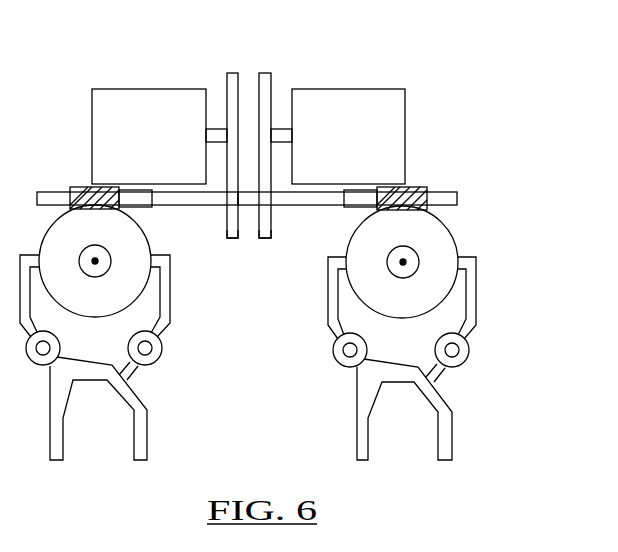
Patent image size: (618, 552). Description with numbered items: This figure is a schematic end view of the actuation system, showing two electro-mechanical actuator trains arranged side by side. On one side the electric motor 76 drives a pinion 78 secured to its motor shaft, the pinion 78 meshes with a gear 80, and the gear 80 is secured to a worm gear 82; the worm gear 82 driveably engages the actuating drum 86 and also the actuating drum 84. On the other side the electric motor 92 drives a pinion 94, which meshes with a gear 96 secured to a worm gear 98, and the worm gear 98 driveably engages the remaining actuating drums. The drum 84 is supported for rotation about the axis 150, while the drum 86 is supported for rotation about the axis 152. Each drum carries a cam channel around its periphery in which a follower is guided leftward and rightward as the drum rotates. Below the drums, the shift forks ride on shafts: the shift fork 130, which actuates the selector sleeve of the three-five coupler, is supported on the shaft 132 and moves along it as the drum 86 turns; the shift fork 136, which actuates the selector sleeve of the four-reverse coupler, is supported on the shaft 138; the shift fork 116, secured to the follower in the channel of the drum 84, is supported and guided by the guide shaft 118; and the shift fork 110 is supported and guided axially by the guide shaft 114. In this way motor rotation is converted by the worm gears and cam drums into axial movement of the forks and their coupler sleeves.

The electric motor 76 is at (160, 147).
The electric motor 92 is at (362, 147).
The pinion 78 is at (232, 72).
The pinion 94 is at (268, 72).
The gear 80 is at (233, 238).
The gear 96 is at (265, 238).
The worm gear 82 is at (212, 205).
The worm gear 98 is at (335, 205).
The actuating drum 86 is at (47, 238).
The actuating drum 84 is at (447, 242).
The axis 152 is at (95, 261).
The axis 150 is at (403, 262).
The shaft 132 is at (40, 365).
The shaft 138 is at (162, 350).
The guide shaft 118 is at (334, 352).
The guide shaft 114 is at (455, 367).
The shift fork 130 is at (66, 397).
The shift fork 136 is at (138, 378).
The shift fork 116 is at (363, 390).
The shift fork 110 is at (433, 377).